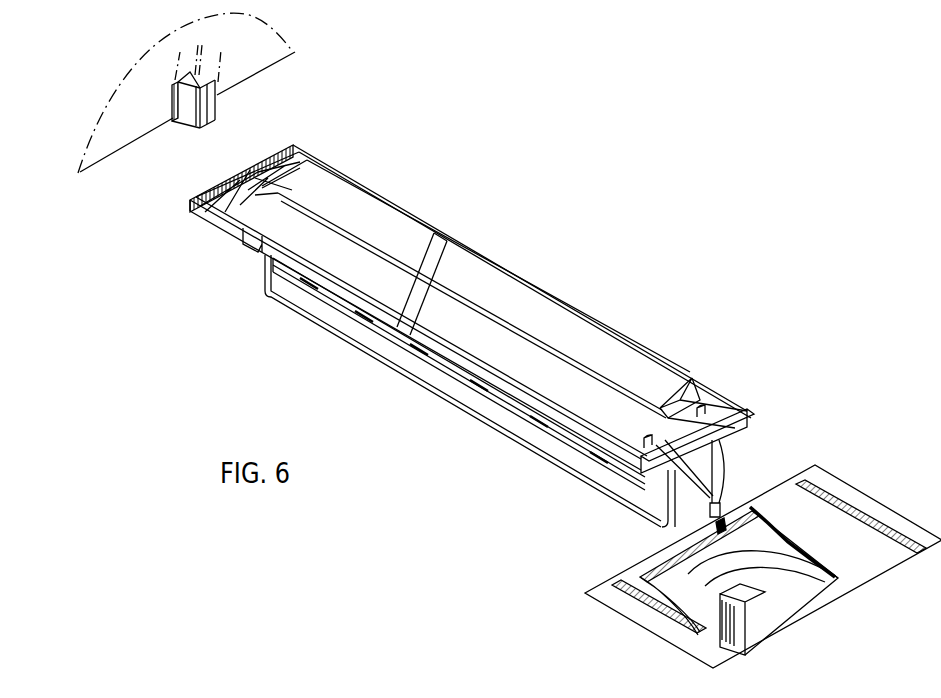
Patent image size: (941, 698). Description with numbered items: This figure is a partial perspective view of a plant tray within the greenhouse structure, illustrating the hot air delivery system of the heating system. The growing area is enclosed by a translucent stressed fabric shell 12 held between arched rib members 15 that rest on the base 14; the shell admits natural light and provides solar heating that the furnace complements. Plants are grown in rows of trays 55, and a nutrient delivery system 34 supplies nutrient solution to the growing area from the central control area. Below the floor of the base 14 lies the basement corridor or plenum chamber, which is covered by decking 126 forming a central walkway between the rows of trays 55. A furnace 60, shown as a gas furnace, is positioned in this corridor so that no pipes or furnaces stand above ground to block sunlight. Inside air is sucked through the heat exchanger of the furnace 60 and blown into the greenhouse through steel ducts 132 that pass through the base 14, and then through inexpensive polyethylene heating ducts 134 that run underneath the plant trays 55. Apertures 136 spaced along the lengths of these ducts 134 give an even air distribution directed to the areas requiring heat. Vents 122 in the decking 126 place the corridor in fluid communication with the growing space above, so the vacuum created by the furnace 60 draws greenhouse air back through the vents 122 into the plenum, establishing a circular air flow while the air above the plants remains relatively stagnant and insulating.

The stressed fabric shell 12 is at (249, 66).
The arched rib members 15 is at (204, 118).
The base 14 is at (432, 166).
The trays 55 is at (490, 380).
The apertures 136 is at (493, 403).
The polyethylene heating ducts 134 is at (565, 438).
The nutrient delivery system 34 is at (657, 562).
The vents 122 is at (832, 500).
The decking 126 is at (873, 562).
The steel ducts 132 is at (787, 583).
The furnace 60 is at (743, 623).